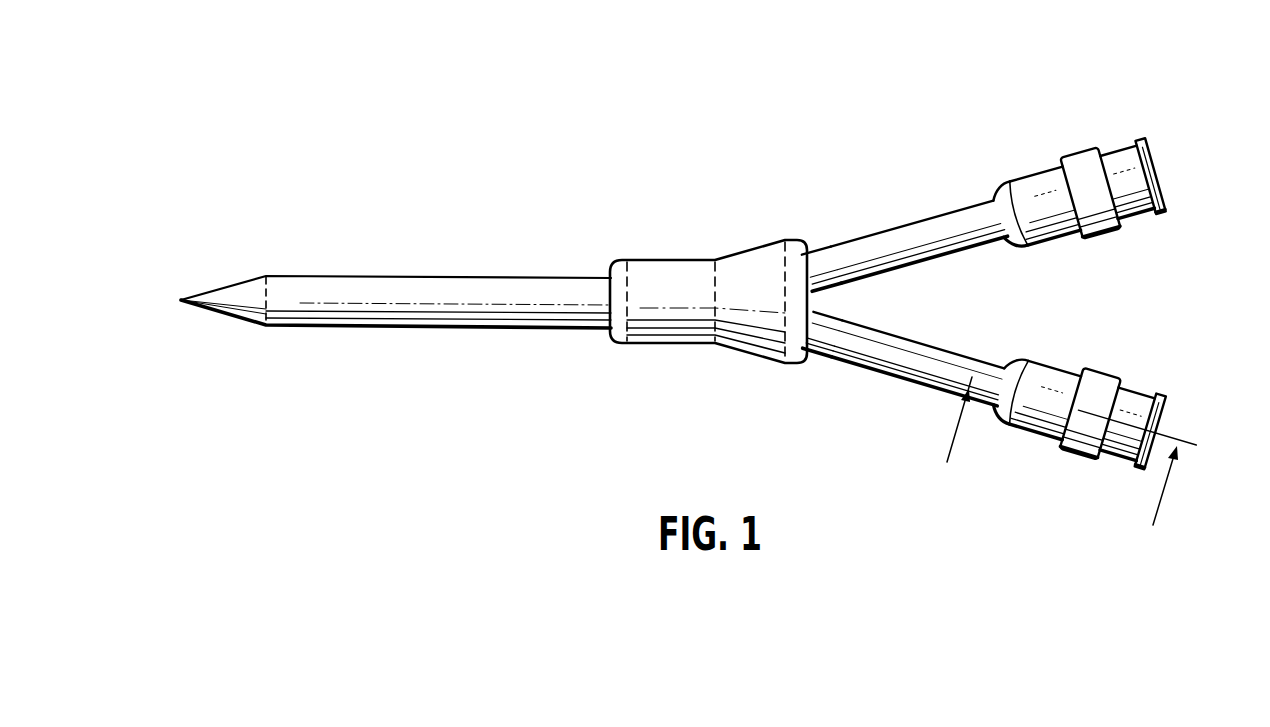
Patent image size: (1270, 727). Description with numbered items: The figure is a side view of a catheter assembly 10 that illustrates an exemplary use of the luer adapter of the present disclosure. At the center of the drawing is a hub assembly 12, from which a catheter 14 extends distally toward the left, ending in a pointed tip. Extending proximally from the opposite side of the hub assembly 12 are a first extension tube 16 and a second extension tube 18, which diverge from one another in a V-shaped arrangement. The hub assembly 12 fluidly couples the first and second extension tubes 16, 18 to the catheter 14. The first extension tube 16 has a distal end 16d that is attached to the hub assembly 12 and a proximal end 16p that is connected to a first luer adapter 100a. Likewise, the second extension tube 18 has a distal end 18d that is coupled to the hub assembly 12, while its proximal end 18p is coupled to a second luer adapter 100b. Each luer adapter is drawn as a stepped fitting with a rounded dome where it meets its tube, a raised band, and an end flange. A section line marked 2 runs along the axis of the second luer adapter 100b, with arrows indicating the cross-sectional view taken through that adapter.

The catheter assembly 10 is at (650, 108).
The hub assembly 12 is at (688, 258).
The catheter 14 is at (463, 308).
The first extension tube 16 is at (895, 230).
The distal end of first extension tube 16d is at (808, 253).
The proximal end of first extension tube 16p is at (985, 202).
The second extension tube 18 is at (895, 375).
The distal end of second extension tube 18d is at (815, 355).
The proximal end of second extension tube 18p is at (997, 358).
The first luer adapter 100a is at (1080, 150).
The second luer adapter 100b is at (1042, 437).
The section line 2- 2 is at (1054, 472).